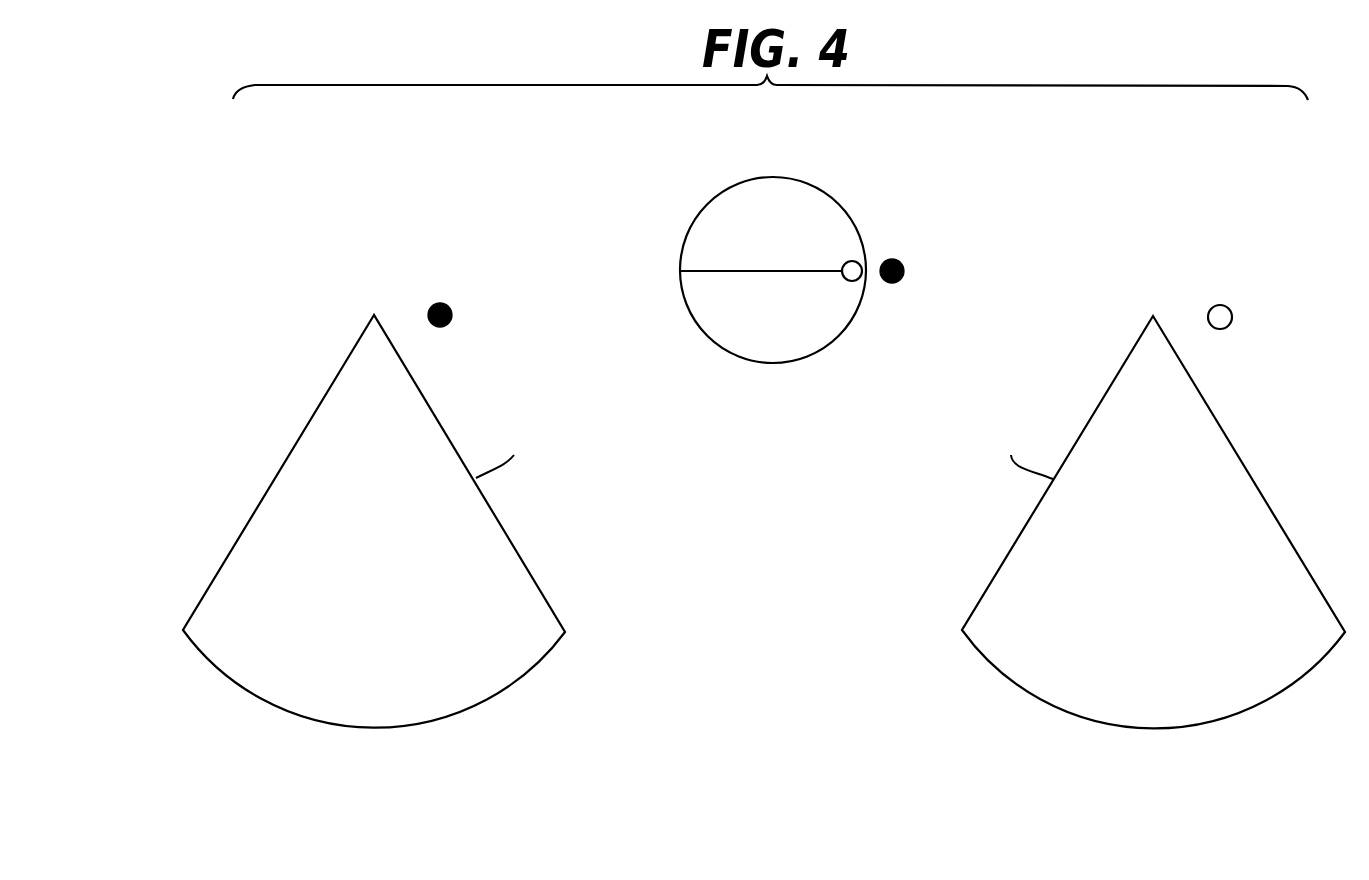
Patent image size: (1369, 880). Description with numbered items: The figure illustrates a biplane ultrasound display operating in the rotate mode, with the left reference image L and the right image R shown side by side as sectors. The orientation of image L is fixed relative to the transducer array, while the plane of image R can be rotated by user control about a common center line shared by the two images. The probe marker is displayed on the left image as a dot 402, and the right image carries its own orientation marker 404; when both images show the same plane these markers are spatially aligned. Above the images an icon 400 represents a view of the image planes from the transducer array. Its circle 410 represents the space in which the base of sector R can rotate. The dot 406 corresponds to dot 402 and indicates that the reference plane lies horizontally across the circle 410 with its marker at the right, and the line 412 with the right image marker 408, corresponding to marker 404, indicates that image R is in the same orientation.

The icon 400 is at (892, 183).
The dot 402 is at (452, 315).
The orientation marker 404 is at (1232, 317).
The dot 406 is at (905, 268).
The right image marker 408 is at (846, 280).
The circle 410 is at (736, 181).
The line 412 is at (773, 268).